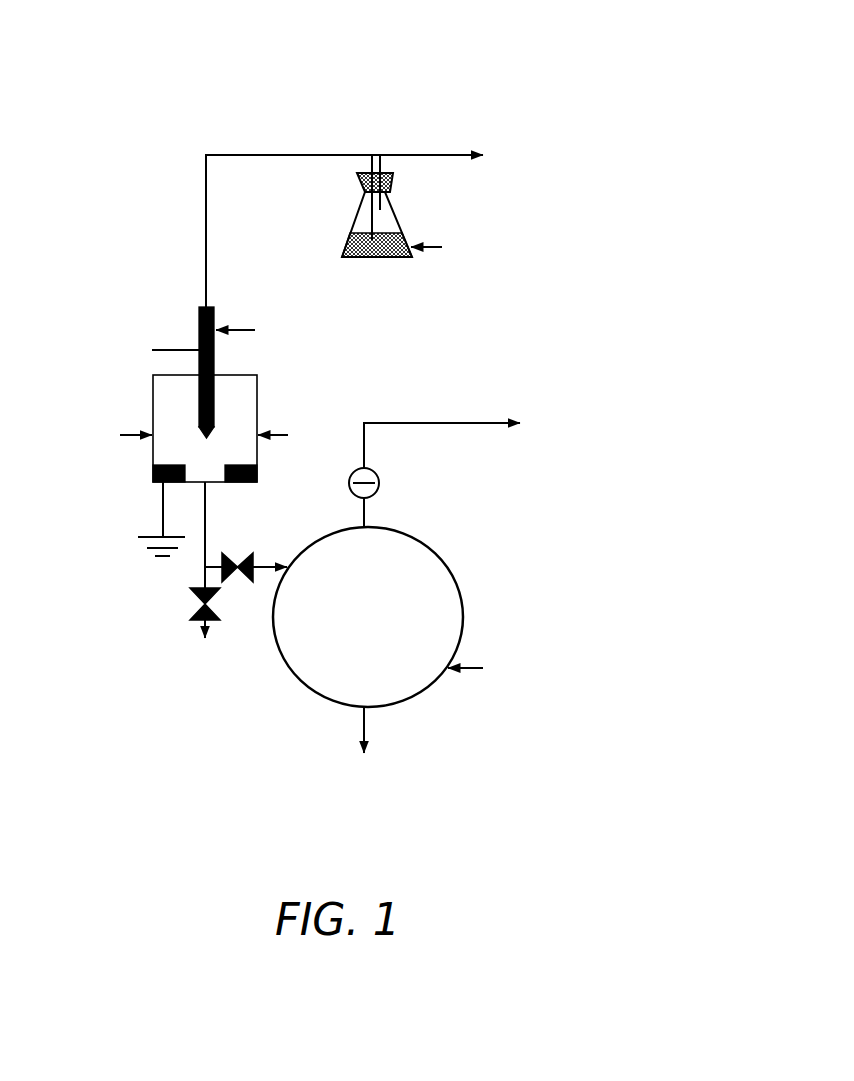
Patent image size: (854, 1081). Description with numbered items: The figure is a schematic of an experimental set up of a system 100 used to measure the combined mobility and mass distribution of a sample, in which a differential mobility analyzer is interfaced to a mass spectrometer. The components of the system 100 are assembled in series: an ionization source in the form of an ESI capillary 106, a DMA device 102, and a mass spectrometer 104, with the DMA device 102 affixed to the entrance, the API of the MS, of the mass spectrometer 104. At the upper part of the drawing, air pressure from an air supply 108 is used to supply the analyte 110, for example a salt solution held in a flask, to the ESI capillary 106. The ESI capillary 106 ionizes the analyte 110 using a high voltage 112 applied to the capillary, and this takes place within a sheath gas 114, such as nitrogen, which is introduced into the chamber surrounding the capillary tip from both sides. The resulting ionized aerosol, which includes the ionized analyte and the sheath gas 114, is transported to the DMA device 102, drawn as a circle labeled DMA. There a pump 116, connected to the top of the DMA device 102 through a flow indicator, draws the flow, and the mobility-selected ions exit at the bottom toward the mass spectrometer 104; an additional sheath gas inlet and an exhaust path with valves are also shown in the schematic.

The system 100 is at (368, 90).
The DMA device 102 is at (431, 548).
The mass spectrometer 104 is at (355, 764).
The ESI capillary 106 is at (300, 360).
The air supply 108 is at (538, 173).
The analyte 110 is at (446, 246).
The high voltage 112 is at (140, 363).
The sheath gas 114 is at (205, 451).
The pump 116 is at (483, 465).